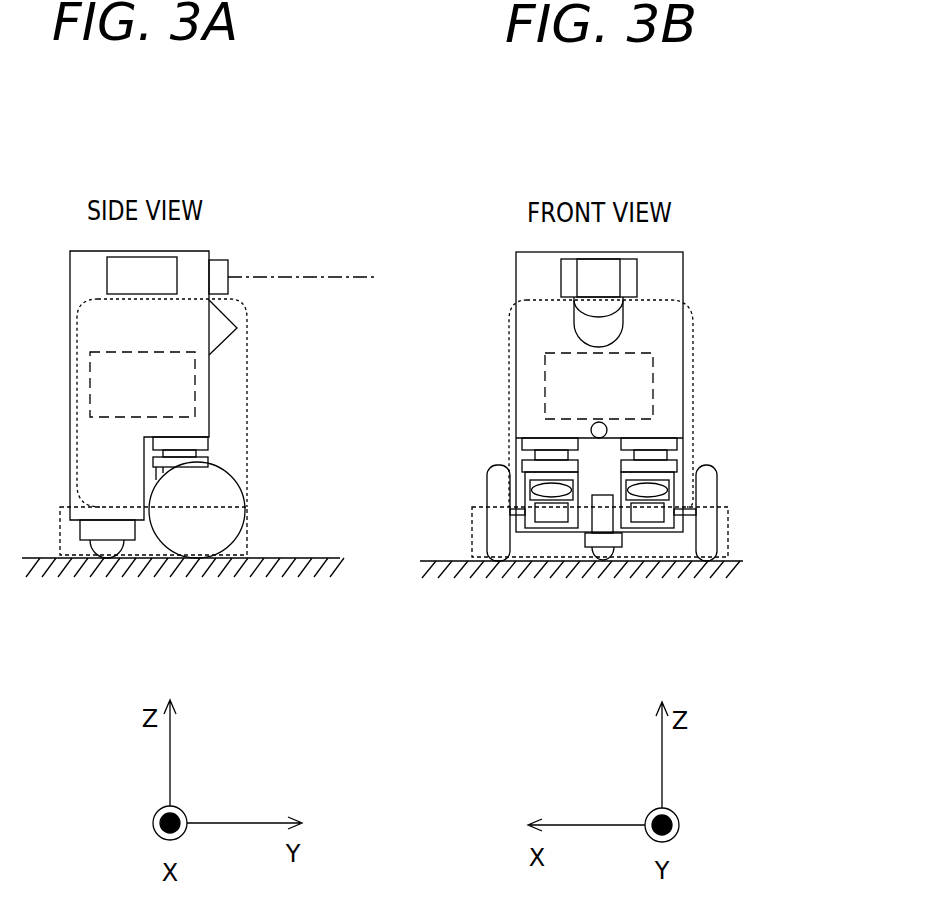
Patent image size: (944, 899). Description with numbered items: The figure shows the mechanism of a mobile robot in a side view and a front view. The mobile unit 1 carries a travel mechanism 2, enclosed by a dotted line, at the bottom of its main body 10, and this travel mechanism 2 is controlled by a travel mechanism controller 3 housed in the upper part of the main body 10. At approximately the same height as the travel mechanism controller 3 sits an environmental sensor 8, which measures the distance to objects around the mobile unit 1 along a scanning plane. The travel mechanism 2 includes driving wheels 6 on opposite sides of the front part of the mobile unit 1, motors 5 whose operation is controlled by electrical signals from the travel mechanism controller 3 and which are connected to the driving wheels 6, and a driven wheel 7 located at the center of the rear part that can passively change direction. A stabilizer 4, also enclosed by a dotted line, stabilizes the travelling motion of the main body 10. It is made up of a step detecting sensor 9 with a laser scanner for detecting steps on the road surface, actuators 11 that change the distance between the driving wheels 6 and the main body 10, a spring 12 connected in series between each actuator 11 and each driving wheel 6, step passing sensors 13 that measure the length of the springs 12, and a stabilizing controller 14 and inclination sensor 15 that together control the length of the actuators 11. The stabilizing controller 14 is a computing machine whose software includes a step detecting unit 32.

In FIG. 3A, the mobile unit 1 is at (250, 185).
In FIG. 3B, the mobile unit 1 is at (705, 185).
In FIG. 3A, the travel mechanism 2 is at (247, 532).
In FIG. 3B, the travel mechanism 2 is at (728, 533).
In FIG. 3A, the travel mechanism controller 3 is at (107, 270).
In FIG. 3B, the travel mechanism controller 3 is at (561, 273).
In FIG. 3A, the stabilizer 4 is at (77, 435).
In FIG. 3B, the stabilizer 4 is at (693, 377).
In FIG. 3B, the motor 5 is at (549, 515).
In FIG. 3A, the driving wheel 6 is at (183, 538).
In FIG. 3B, the driving wheel 6 is at (498, 543).
In FIG. 3A, the driven wheel 7 is at (100, 548).
In FIG. 3B, the driven wheel 7 is at (603, 552).
In FIG. 3A, the environmental sensor 8 is at (228, 268).
In FIG. 3B, the environmental sensor 8 is at (607, 275).
In FIG. 3A, the step detecting sensor 9 is at (227, 340).
In FIG. 3B, the step detecting sensor 9 is at (615, 323).
In FIG. 3A, the main body 10 is at (70, 300).
In FIG. 3B, the main body 10 is at (516, 298).
In FIG. 3A, the actuator 11 is at (190, 453).
In FIG. 3B, the actuator 11 is at (547, 443).
In FIG. 3B, the spring 12 is at (586, 466).
In FIG. 3B, the step passing sensor 13 is at (667, 478).
In FIG. 3A, the stabilizing controller 14 is at (90, 373).
In FIG. 3B, the stabilizing controller 14 is at (545, 373).
In FIG. 3B, the inclination sensor 15 is at (607, 427).
In FIG. 3B, the step detecting unit 32 is at (530, 478).